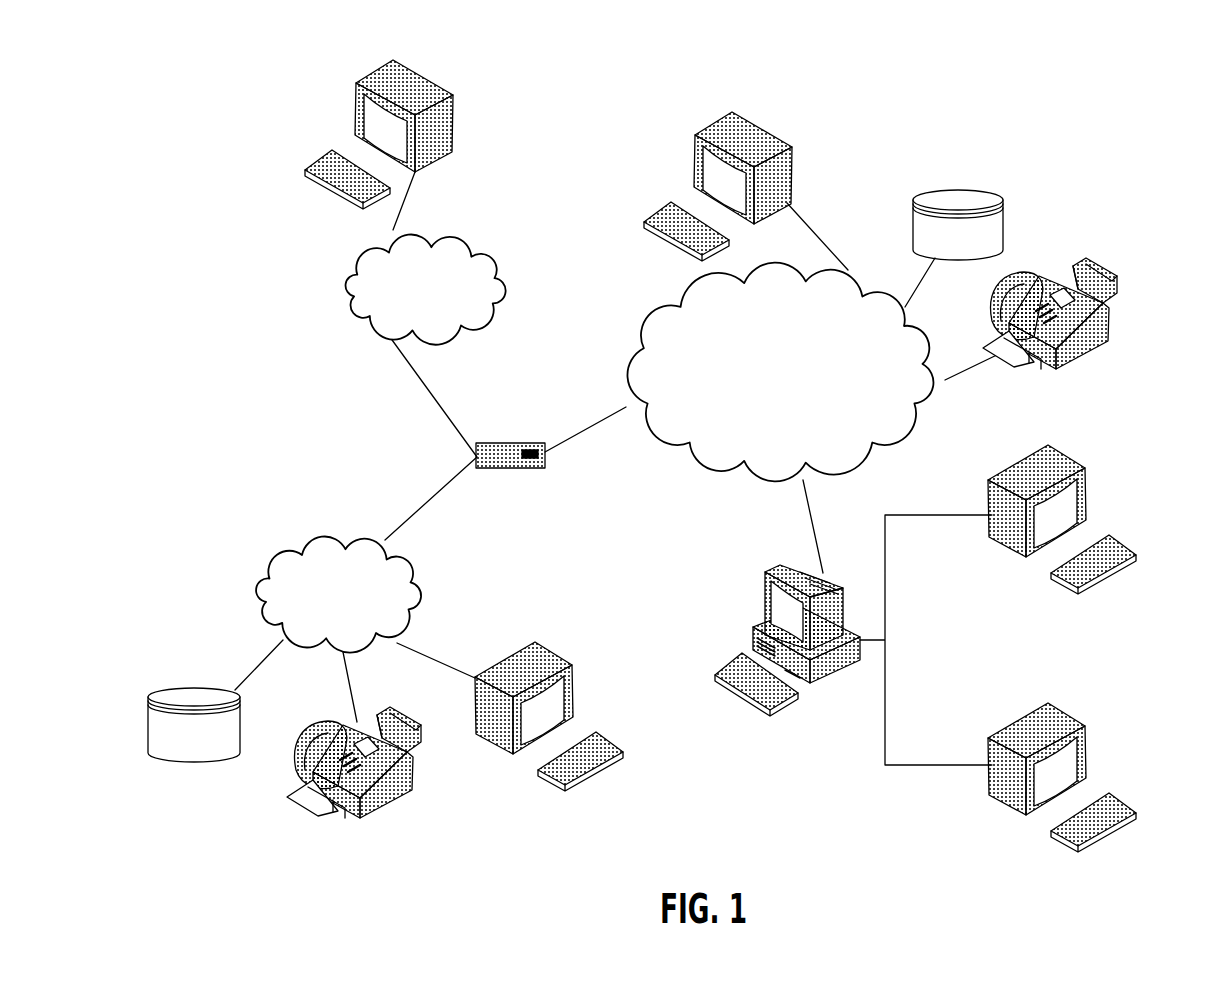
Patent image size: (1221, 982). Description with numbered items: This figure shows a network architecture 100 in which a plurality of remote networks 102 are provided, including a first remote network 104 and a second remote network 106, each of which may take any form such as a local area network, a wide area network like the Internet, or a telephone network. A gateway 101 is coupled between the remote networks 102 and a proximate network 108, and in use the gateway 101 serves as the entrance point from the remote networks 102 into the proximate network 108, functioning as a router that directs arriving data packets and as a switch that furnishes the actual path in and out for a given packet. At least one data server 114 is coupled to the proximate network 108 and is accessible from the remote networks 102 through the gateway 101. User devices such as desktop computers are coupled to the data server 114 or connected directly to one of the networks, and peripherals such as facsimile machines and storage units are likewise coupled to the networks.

The architecture 100 is at (706, 31).
The gateway 101 is at (510, 442).
The remote networks 102 is at (323, 370).
The first remote network 104 is at (253, 568).
The second remote network 106 is at (512, 293).
The proximate network 108 is at (908, 437).
The data server 114 is at (762, 593).